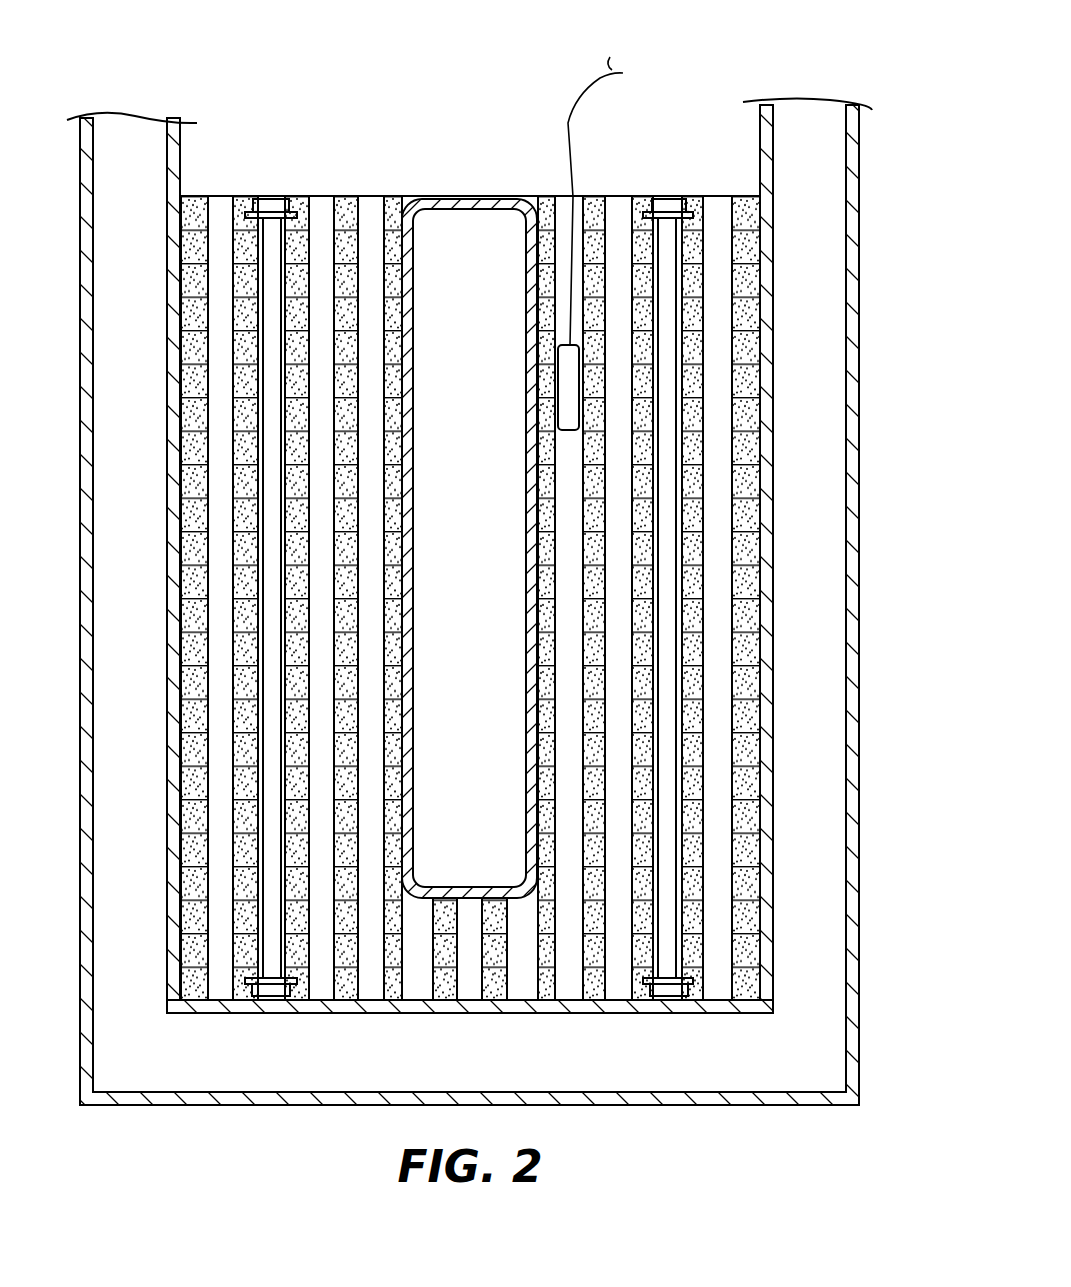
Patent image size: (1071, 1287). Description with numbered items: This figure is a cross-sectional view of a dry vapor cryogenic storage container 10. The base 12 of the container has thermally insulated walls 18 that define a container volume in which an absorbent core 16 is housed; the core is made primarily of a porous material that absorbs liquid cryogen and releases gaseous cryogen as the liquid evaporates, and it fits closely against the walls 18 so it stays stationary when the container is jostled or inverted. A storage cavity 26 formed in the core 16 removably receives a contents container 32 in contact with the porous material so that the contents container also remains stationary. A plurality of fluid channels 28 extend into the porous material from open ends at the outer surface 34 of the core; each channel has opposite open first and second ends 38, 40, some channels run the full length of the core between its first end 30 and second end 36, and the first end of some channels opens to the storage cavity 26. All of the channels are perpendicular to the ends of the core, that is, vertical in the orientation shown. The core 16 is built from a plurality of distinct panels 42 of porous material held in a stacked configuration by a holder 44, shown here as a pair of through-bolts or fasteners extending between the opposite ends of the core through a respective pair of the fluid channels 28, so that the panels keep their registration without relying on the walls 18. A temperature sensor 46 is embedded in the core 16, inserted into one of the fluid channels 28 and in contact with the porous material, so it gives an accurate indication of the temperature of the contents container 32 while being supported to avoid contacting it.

The dry vapor cryogenic storage container 10 is at (880, 150).
The base 12 is at (857, 572).
The absorbent core 16 is at (362, 176).
The thermally insulated walls 18 is at (823, 300).
The storage cavity 26 is at (469, 484).
The fluid channels 28 is at (213, 213).
The first end 30 is at (598, 193).
The contents container 32 is at (472, 205).
The outer surface 34 is at (180, 635).
The second end 36 is at (538, 1000).
The first end of fluid channel 38 is at (337, 205).
The second end of fluid channel 40 is at (315, 988).
The panels 42 is at (180, 333).
The holder 44 is at (670, 967).
The temperature sensor 46 is at (568, 388).